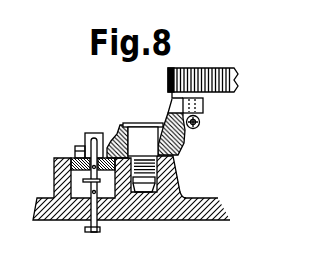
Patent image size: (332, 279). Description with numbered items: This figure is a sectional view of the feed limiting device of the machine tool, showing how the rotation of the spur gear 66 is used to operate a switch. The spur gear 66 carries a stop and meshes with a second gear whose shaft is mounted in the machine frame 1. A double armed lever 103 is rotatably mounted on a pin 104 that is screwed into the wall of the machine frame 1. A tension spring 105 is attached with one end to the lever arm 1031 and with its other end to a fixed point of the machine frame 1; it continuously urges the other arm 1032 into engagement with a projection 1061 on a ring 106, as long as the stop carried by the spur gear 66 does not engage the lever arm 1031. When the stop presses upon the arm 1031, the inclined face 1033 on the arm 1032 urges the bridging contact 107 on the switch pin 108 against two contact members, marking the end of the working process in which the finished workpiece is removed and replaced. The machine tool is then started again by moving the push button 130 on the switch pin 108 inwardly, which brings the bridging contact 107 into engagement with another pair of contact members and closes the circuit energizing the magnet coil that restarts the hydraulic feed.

The machine frame 1 is at (197, 205).
The spur gear 66 is at (190, 68).
The double armed lever 103 is at (123, 123).
The pin 104 is at (142, 138).
The tension spring 105 is at (198, 127).
The ring 106 is at (54, 162).
The bridging contact 107 is at (83, 181).
The switch pin 108 is at (88, 220).
The push button 130 is at (98, 231).
The lever arm 1031 is at (203, 108).
The arm 1032 is at (113, 131).
The inclined face 1033 is at (85, 133).
The projection 1061 is at (76, 148).